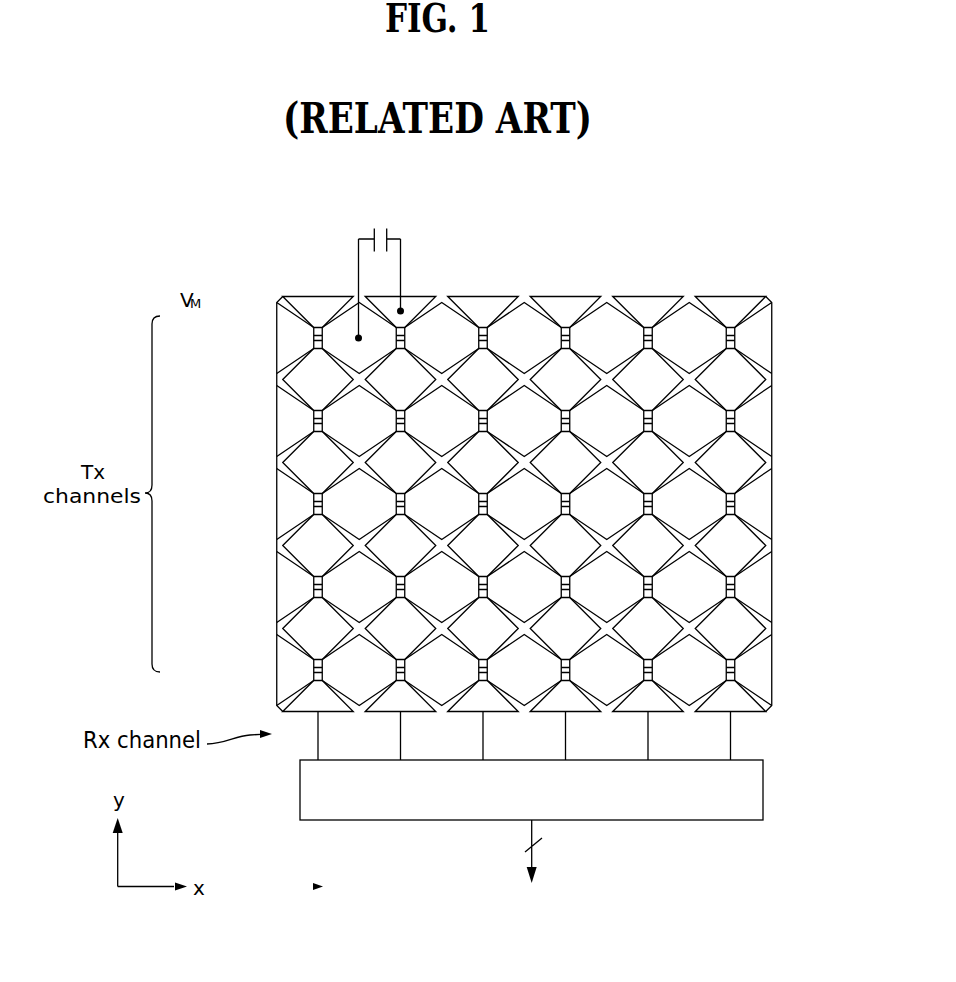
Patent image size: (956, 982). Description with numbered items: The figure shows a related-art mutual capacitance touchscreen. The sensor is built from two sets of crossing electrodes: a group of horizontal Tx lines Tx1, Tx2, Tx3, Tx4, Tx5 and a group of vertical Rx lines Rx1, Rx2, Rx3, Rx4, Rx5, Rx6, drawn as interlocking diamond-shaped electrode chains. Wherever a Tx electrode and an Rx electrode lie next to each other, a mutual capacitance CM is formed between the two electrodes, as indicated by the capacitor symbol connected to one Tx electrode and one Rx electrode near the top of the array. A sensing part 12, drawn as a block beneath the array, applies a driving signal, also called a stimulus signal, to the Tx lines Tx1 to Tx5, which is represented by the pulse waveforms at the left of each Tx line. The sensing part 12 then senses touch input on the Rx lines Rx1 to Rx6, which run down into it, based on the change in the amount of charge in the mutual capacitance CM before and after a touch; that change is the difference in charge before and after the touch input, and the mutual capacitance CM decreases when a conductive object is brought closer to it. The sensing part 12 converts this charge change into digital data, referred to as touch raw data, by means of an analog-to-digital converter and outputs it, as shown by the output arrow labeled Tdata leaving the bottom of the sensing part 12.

The sensing part 12 is at (763, 789).
The Tx line Tx1 is at (264, 340).
The Tx line Tx2 is at (264, 423).
The Tx line Tx3 is at (264, 506).
The Tx line Tx4 is at (264, 589).
The Tx line Tx5 is at (264, 672).
The Rx line Rx1 is at (317, 529).
The Rx line Rx2 is at (400, 529).
The Rx line Rx3 is at (482, 529).
The Rx line Rx4 is at (565, 529).
The Rx line Rx5 is at (647, 529).
The Rx line Rx6 is at (730, 529).
The mutual capacitance CM is at (379, 271).
The touch data output Tdata is at (531, 865).